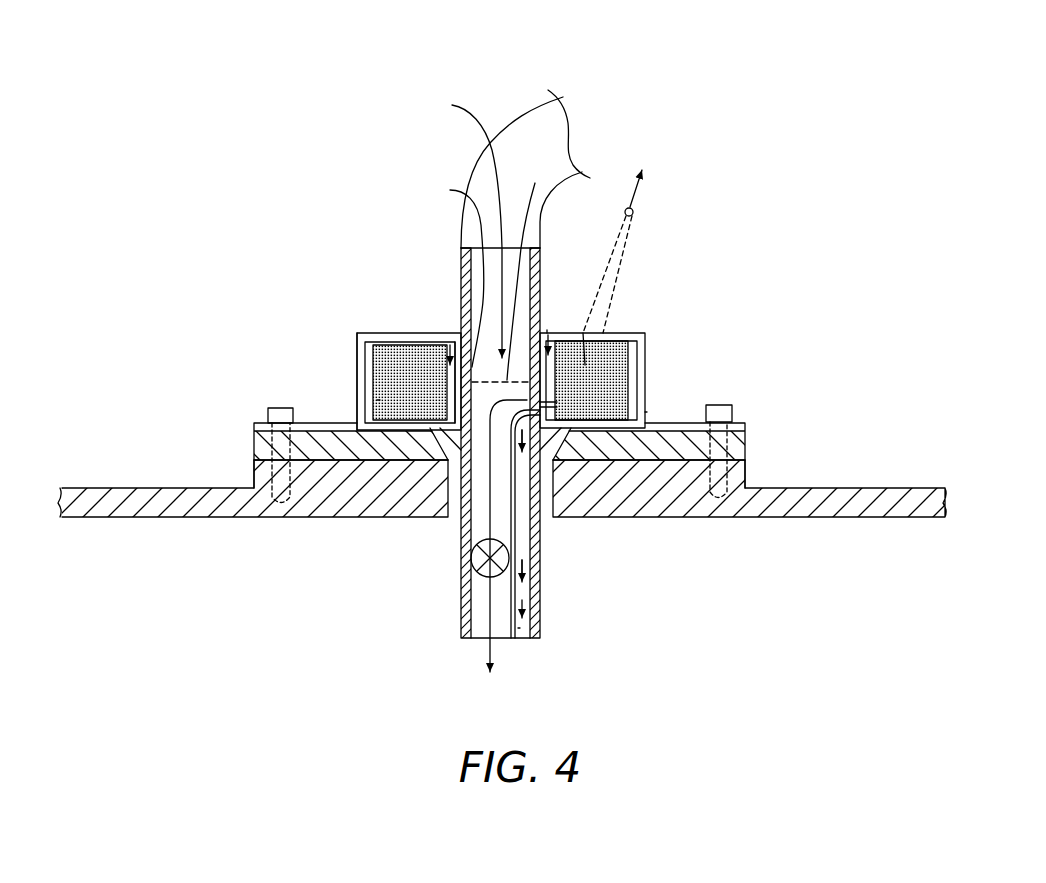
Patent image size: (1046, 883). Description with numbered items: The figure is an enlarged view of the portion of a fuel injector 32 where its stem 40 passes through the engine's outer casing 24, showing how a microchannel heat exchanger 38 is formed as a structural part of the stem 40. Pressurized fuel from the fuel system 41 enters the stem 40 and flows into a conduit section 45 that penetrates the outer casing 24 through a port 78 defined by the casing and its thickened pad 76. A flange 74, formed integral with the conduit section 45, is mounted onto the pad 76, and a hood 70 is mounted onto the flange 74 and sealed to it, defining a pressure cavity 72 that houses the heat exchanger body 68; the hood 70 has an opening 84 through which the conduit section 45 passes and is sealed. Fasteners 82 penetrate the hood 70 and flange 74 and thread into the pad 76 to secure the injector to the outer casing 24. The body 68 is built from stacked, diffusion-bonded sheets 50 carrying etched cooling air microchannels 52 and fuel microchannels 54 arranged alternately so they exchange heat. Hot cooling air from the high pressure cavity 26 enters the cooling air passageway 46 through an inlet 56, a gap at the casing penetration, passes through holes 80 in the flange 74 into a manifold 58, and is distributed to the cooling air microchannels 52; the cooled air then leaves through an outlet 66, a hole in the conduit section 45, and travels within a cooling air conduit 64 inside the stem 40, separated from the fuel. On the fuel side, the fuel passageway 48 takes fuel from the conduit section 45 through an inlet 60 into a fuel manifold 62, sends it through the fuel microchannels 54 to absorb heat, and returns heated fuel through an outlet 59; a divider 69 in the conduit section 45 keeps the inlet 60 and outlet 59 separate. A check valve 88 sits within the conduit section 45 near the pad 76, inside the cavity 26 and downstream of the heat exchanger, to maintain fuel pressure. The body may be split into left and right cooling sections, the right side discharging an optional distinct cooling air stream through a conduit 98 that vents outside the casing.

The outer casing 24 is at (100, 487).
The cavity 26 is at (116, 586).
The fuel injector 32 is at (495, 93).
The heat exchanger 38 is at (237, 265).
The stem 40 is at (451, 165).
The fuel system 41 is at (546, 138).
The conduit section 45 is at (445, 254).
The cooling air passageway 46 is at (637, 340).
The fuel passageway 48 is at (455, 335).
The sheets 50 is at (392, 343).
The cooling air microchannels 52 is at (583, 333).
The fuel microchannels 54 is at (605, 388).
The inlet 56 is at (546, 500).
The manifold 58 is at (374, 400).
The outlet 59 is at (510, 268).
The inlet 60 is at (452, 190).
The fuel manifold 62 is at (547, 330).
The cooling air conduit 64 is at (518, 628).
The outlet 66 is at (647, 413).
The heat exchanger body 68 is at (300, 265).
The divider 69 is at (460, 225).
The hood 70 is at (358, 355).
The pressure cavity 72 is at (358, 388).
The flange 74 is at (746, 431).
The pad 76 is at (747, 460).
The port 78 is at (568, 481).
The holes 80 is at (427, 440).
The fasteners 82 is at (268, 412).
The opening 84 is at (457, 330).
The check valve 88 is at (476, 582).
The conduit 98 is at (641, 240).